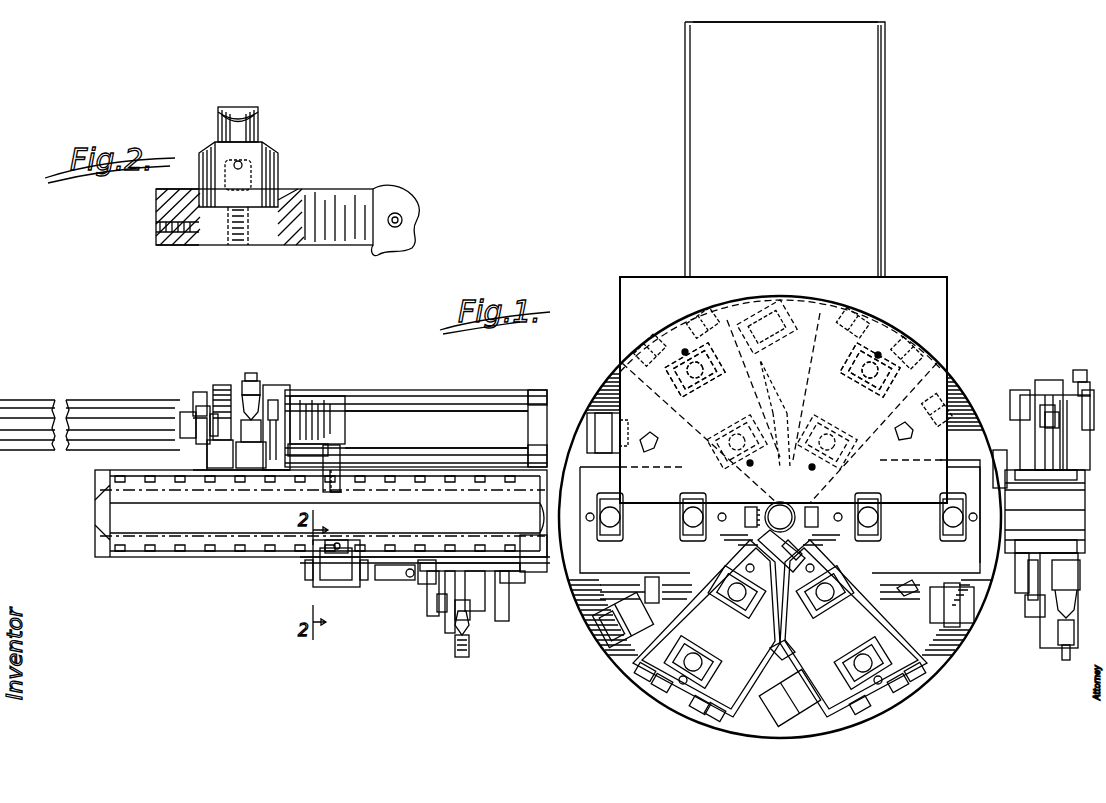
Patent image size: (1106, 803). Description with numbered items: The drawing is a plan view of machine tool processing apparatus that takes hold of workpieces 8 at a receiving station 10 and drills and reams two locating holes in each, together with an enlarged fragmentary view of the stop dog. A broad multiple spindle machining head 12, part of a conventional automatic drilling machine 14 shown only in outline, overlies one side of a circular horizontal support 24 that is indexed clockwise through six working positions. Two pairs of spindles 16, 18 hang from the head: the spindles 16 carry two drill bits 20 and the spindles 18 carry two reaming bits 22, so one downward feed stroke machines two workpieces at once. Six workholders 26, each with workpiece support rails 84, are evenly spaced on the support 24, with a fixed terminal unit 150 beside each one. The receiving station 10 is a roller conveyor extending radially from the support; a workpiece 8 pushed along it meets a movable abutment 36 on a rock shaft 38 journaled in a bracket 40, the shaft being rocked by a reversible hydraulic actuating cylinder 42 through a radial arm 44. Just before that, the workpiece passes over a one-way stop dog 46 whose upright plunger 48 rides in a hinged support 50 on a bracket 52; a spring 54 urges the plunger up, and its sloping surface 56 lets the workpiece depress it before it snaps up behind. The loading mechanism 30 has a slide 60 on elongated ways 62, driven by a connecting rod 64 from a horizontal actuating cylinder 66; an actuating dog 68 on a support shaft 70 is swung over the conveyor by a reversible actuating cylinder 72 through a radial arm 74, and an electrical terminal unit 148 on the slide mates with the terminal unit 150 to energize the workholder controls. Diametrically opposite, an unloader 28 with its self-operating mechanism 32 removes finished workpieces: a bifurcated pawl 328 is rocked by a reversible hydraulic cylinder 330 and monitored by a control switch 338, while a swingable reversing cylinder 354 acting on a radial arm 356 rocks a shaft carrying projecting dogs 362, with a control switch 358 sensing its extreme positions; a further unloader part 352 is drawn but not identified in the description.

In FIG. 1, the workpiece 8 is at (100, 525).
In FIG. 1, the receiving station 10 is at (370, 565).
In FIG. 1, the multiple spindle machining head 12 is at (630, 282).
In FIG. 1, the automatic drilling machine 14 is at (893, 248).
In FIG. 1, the spindles 16 is at (700, 352).
In FIG. 1, the spindles 18 is at (888, 366).
In FIG. 1, the drill bits 20 is at (684, 355).
In FIG. 1, the reaming bits 22 is at (875, 355).
In FIG. 1, the rotatable support 24 is at (970, 648).
In FIG. 1, the workholders 26 is at (836, 742).
In FIG. 1, the unloader 28 is at (1042, 660).
In FIG. 1, the loading mechanism 30 is at (372, 385).
In FIG. 1, the self-operating mechanism 32 is at (1048, 380).
In FIG. 1, the movable abutment 36 is at (528, 565).
In FIG. 1, the rock shaft 38 is at (475, 600).
In FIG. 1, the bracket 40 is at (510, 590).
In FIG. 1, the reversible hydraulic actuating cylinder 42 is at (468, 648).
In FIG. 1, the radial arm 44 is at (480, 556).
In FIG. 2, the one-way stop dog 46 is at (282, 135).
In FIG. 1, the one-way stop dog 46 is at (342, 542).
In FIG. 2, the upright plunger 48 is at (218, 124).
In FIG. 2, the support 50 is at (335, 200).
In FIG. 1, the support 50 is at (320, 562).
In FIG. 1, the bracket 52 is at (310, 590).
In FIG. 2, the spring 54 is at (238, 246).
In FIG. 2, the sloping surface 56 is at (240, 112).
In FIG. 1, the slide 60 is at (222, 390).
In FIG. 1, the elongated ways 62 is at (310, 398).
In FIG. 1, the connecting rod 64 is at (200, 410).
In FIG. 1, the horizontal actuating cylinder 66 is at (62, 400).
In FIG. 1, the actuating dog 68 is at (340, 482).
In FIG. 1, the support shaft 70 is at (310, 474).
In FIG. 1, the reversible actuating cylinder 72 is at (256, 385).
In FIG. 1, the radial arm 74 is at (298, 425).
In FIG. 1, the workpiece support rails 84 is at (665, 690).
In FIG. 1, the electrical terminal unit 148 is at (320, 426).
In FIG. 1, the terminal unit 150 is at (610, 437).
In FIG. 1, the bifurcated pawl 328 is at (1000, 452).
In FIG. 1, the reversible hydraulic cylinder 330 is at (1085, 370).
In FIG. 1, the control switch 338 is at (1045, 418).
In FIG. 1, the tool 352 is at (1072, 645).
In FIG. 1, the swingable reversing cylinder 354 is at (1065, 662).
In FIG. 1, the radial arm 356 is at (1075, 590).
In FIG. 1, the control switch 358 is at (1030, 607).
In FIG. 1, the projecting dogs 362 is at (1022, 585).